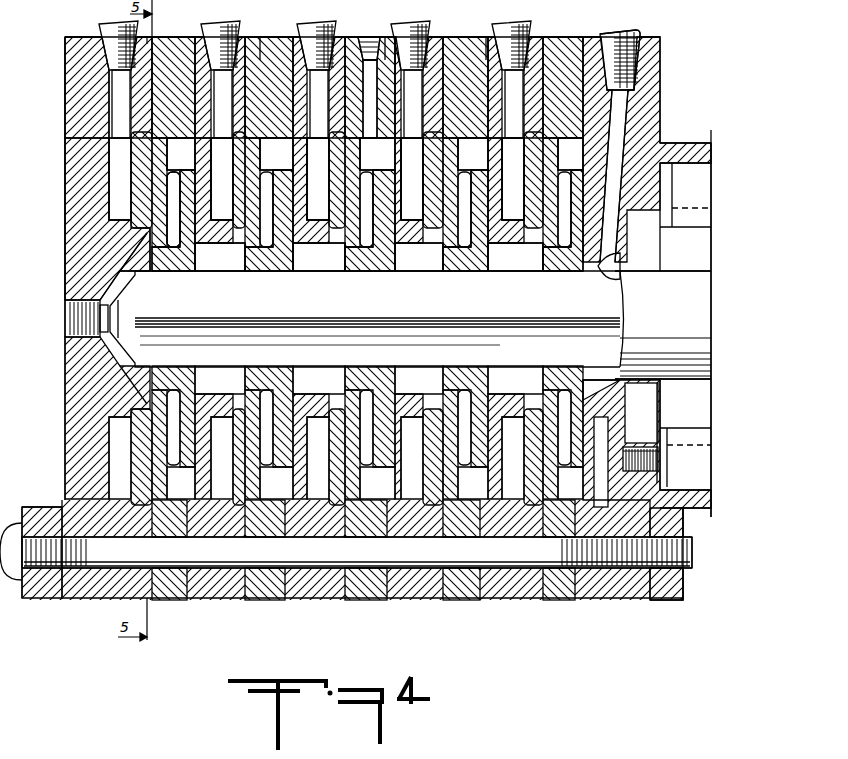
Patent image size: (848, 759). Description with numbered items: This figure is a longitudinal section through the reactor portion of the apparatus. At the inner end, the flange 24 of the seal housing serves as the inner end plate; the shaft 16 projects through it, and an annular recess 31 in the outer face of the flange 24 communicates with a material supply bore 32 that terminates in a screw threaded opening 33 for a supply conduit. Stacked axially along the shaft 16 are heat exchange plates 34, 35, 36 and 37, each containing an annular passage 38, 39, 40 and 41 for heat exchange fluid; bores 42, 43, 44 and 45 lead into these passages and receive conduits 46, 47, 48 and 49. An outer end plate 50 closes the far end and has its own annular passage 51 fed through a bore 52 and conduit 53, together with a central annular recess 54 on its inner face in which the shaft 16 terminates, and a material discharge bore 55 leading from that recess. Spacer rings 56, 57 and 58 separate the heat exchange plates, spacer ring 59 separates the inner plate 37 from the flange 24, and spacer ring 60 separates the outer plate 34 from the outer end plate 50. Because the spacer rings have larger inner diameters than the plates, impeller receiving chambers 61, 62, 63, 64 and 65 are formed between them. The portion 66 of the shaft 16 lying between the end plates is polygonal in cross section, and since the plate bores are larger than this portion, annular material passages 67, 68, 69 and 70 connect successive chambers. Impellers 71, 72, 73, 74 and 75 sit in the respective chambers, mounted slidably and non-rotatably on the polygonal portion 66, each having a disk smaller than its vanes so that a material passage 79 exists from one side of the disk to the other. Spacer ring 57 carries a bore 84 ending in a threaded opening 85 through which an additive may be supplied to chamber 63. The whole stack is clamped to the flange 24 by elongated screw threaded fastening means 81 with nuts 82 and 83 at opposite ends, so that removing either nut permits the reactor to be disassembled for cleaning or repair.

The shaft 16 is at (690, 271).
The flange 24 is at (660, 37).
The annular recess 31 is at (616, 276).
The material supply bore 32 is at (628, 112).
The screw threaded opening 33 is at (640, 60).
The heat exchange plate 34 is at (269, 77).
The heat exchange plate 35 is at (343, 37).
The heat exchange plate 36 is at (465, 77).
The heat exchange plate 37 is at (540, 37).
The annular passage 38 is at (222, 193).
The annular passage 39 is at (324, 189).
The annular passage 40 is at (417, 181).
The annular passage 41 is at (518, 193).
The bore 42 is at (222, 179).
The bore 43 is at (318, 179).
The bore 44 is at (412, 179).
The bore 45 is at (513, 179).
The conduit 46 is at (213, 22).
The conduit 47 is at (322, 22).
The conduit 48 is at (432, 18).
The conduit 49 is at (510, 22).
The outer end plate 50 is at (65, 100).
The annular passage 51 is at (112, 192).
The bore 52 is at (109, 90).
The conduit 53 is at (108, 24).
The annular recess 54 is at (120, 288).
The material discharge bore 55 is at (72, 332).
The spacer ring 56 is at (262, 37).
The spacer ring 57 is at (385, 37).
The spacer ring 58 is at (486, 37).
The spacer ring 59 is at (600, 34).
The spacer ring 60 is at (185, 37).
The impeller receiving chamber 61 is at (188, 154).
The impeller receiving chamber 62 is at (281, 154).
The impeller receiving chamber 63 is at (382, 160).
The impeller receiving chamber 64 is at (478, 168).
The impeller receiving chamber 65 is at (576, 171).
The polygonal portion 66 is at (409, 311).
The annular material passage 67 is at (226, 266).
The annular material passage 68 is at (326, 267).
The annular material passage 69 is at (422, 267).
The annular material passage 70 is at (519, 267).
The impeller 71 is at (178, 271).
The impeller 72 is at (288, 271).
The impeller 73 is at (360, 271).
The impeller 74 is at (458, 271).
The impeller 75 is at (552, 271).
The material passage 79 is at (167, 174).
The elongated screw threaded fastening means 81 is at (167, 559).
The nut 82 is at (32, 598).
The nut 83 is at (680, 590).
The bore 84 is at (360, 37).
The threaded opening 85 is at (370, 38).